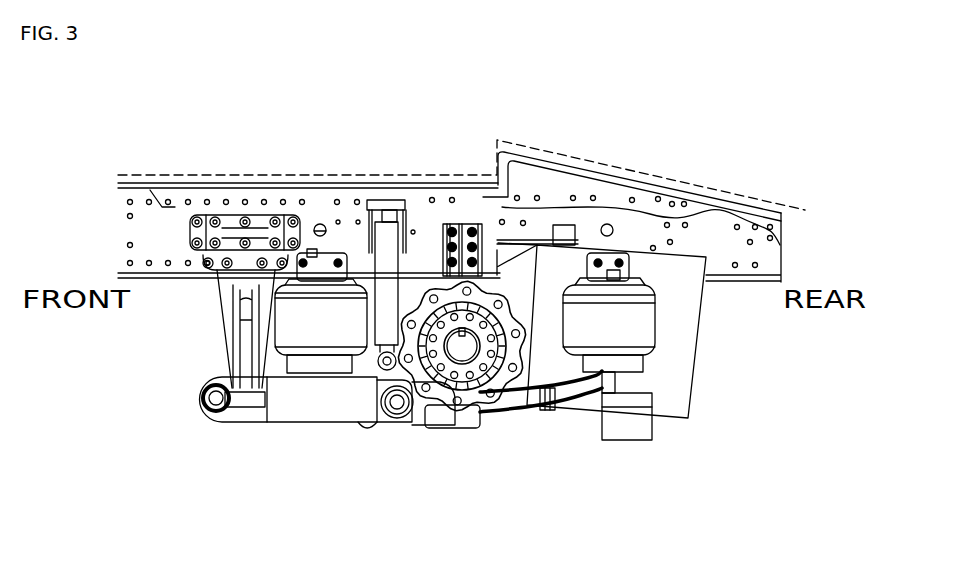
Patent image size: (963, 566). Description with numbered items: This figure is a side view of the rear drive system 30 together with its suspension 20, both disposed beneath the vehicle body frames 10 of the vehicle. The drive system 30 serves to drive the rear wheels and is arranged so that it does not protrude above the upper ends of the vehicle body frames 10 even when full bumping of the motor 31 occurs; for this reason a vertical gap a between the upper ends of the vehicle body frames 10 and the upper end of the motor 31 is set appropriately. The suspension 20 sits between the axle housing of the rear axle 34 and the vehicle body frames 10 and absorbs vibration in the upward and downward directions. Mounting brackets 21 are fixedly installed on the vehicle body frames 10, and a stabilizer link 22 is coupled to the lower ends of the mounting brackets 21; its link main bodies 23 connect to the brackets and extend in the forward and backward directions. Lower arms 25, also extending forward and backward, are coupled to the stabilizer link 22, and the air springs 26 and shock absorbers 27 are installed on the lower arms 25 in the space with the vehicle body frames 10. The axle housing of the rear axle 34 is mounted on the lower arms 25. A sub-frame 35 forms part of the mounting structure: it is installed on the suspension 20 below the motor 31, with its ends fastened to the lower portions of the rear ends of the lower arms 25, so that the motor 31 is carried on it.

The vehicle body frame 10 is at (160, 242).
The suspension 20 is at (338, 467).
The mounting bracket 21 is at (222, 305).
The stabilizer link 22 is at (318, 425).
The link main body 23 is at (322, 467).
The lower arm 25 is at (556, 412).
The air spring 26 is at (597, 312).
The shock absorber 27 is at (392, 273).
The drive system 30 is at (654, 330).
The motor 31 is at (700, 331).
The rear axle 34 is at (480, 297).
The sub-frame 35 is at (628, 427).
The vertical gap a is at (714, 190).